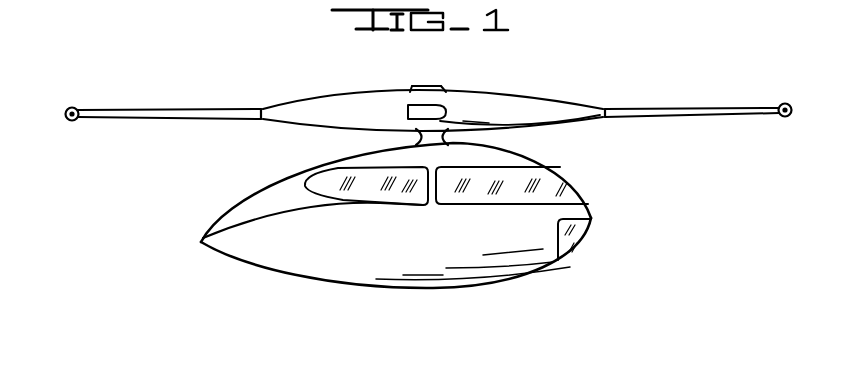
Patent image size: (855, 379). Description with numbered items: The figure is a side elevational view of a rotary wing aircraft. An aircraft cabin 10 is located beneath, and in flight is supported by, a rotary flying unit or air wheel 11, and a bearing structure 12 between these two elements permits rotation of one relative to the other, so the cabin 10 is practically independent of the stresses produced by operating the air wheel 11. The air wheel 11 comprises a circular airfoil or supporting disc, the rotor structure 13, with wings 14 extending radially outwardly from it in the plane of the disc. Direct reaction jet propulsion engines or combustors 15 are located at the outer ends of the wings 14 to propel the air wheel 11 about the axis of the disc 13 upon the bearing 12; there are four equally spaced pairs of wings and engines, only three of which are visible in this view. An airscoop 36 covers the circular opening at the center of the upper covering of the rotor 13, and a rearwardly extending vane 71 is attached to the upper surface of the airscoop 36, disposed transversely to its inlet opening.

The aircraft cabin 10 is at (545, 168).
The air wheel 11 is at (348, 90).
The bearing structure 12 is at (454, 135).
The rotor structure 13 is at (505, 98).
The wings 14 is at (197, 109).
The combustors 15 is at (77, 105).
The airscoop 36 is at (437, 88).
The vane 71 is at (407, 86).